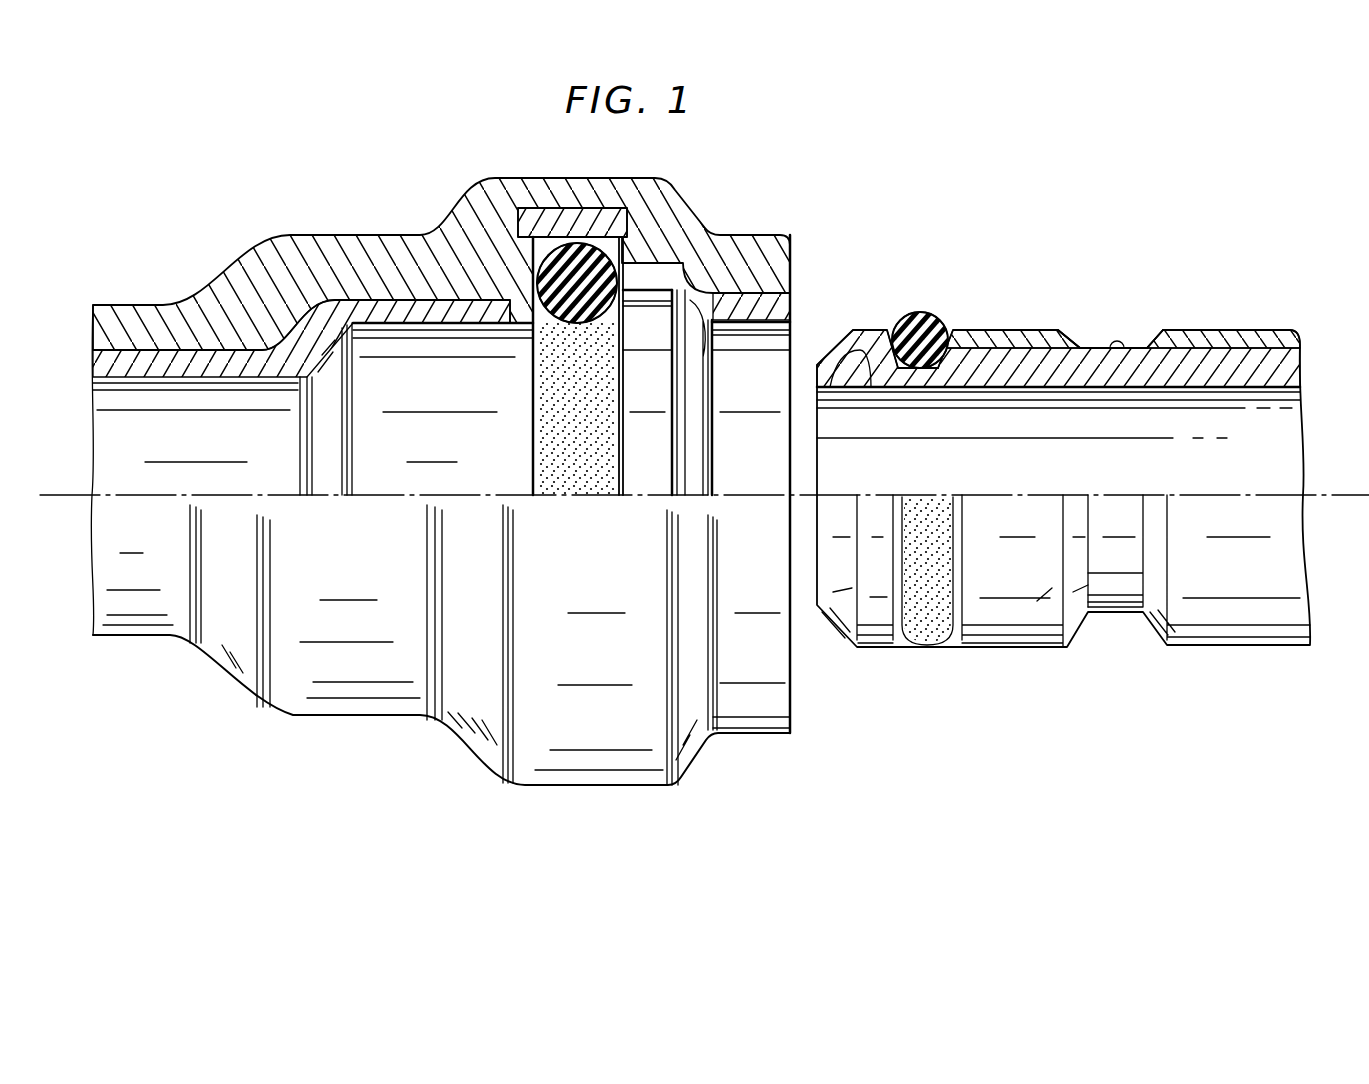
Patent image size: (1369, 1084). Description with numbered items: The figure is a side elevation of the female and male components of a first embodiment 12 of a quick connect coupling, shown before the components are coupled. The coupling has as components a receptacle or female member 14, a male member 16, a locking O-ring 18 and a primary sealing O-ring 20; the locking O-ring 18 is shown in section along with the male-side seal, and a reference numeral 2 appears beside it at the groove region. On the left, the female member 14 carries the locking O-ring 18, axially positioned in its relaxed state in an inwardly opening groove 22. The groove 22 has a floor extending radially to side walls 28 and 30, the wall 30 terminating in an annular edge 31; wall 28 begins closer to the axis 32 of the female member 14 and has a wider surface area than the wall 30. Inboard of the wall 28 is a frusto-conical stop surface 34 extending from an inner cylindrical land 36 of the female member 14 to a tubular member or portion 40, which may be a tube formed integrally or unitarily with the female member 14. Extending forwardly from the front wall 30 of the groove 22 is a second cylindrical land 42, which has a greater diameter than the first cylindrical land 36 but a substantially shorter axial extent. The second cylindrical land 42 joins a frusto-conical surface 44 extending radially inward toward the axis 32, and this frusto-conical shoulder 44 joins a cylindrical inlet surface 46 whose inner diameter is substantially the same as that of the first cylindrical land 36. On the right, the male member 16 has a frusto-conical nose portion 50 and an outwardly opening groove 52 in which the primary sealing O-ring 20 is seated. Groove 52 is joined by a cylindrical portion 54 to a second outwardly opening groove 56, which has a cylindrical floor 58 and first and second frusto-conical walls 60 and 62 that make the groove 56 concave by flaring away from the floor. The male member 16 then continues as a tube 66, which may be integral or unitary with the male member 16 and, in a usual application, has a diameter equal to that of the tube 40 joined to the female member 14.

The O-ring seal 2 is at (548, 237).
The first embodiment of quick connect coupling 12 is at (834, 282).
The female member 14 is at (588, 172).
The male member 16 is at (995, 322).
The locking O-ring 18 is at (600, 444).
The primary sealing O-ring 20 is at (920, 316).
The inwardly opening groove 22 is at (627, 222).
The side wall 28 is at (515, 222).
The side wall 30 is at (615, 257).
The annular edge 31 is at (617, 322).
The axis 32 is at (815, 500).
The frusto-conical stop surface 34 is at (332, 365).
The inner cylindrical land 36 is at (430, 323).
The tubular member or portion 40 is at (215, 451).
The second cylindrical land 42 is at (666, 392).
The frusto-conical surface 44 is at (708, 360).
The cylindrical inlet surface 46 is at (785, 367).
The frusto-conical nose portion 50 is at (812, 437).
The outwardly opening groove 52 is at (937, 370).
The cylindrical portion 54 is at (1046, 330).
The second outwardly opening groove 56 is at (1135, 324).
The cylindrical floor 58 is at (1118, 352).
The first frusto-conical wall 60 is at (1082, 336).
The second frusto-conical wall 62 is at (1162, 327).
The tube 66 is at (1274, 467).